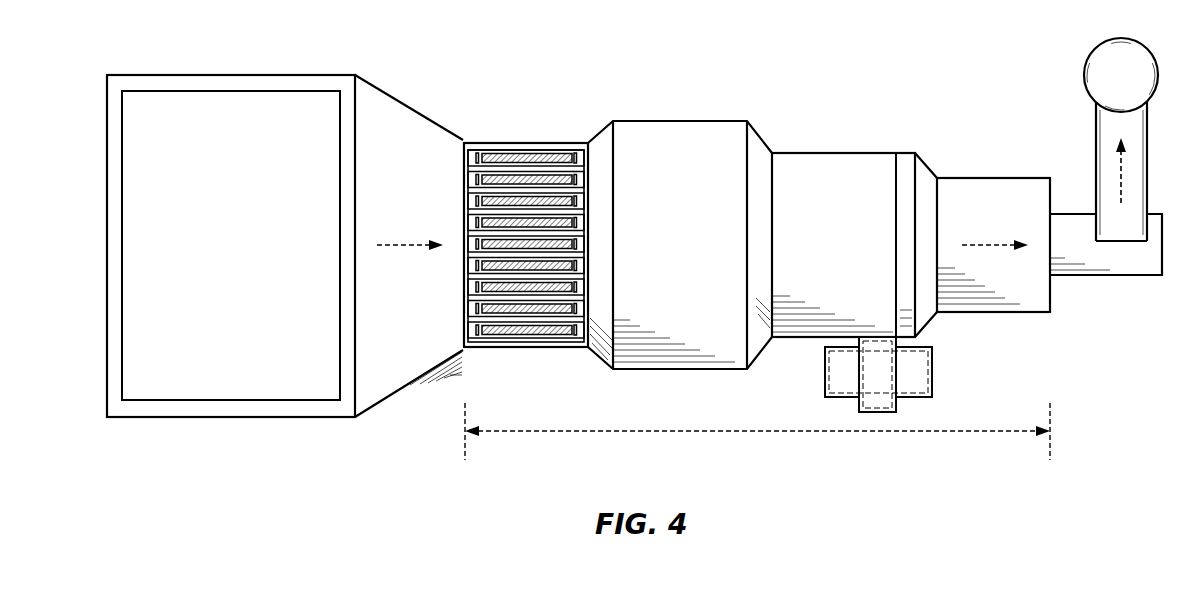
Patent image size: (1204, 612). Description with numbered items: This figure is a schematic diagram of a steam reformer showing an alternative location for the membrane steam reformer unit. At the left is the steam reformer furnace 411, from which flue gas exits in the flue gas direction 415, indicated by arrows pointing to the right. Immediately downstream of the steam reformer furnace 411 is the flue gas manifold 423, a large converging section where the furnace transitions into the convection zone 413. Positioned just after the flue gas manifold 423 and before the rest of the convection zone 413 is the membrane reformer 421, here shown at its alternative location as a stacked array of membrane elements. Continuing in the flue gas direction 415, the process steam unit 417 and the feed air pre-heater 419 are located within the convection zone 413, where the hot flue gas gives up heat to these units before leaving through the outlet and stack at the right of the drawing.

The steam reformer furnace 411 is at (253, 257).
The convection zone 413 is at (757, 433).
The flue gas direction 415 is at (404, 245).
The process steam unit 417 is at (702, 258).
The feed air pre-heater 419 is at (856, 258).
The membrane reformer 421 is at (521, 146).
The flue gas manifold 423 is at (452, 140).